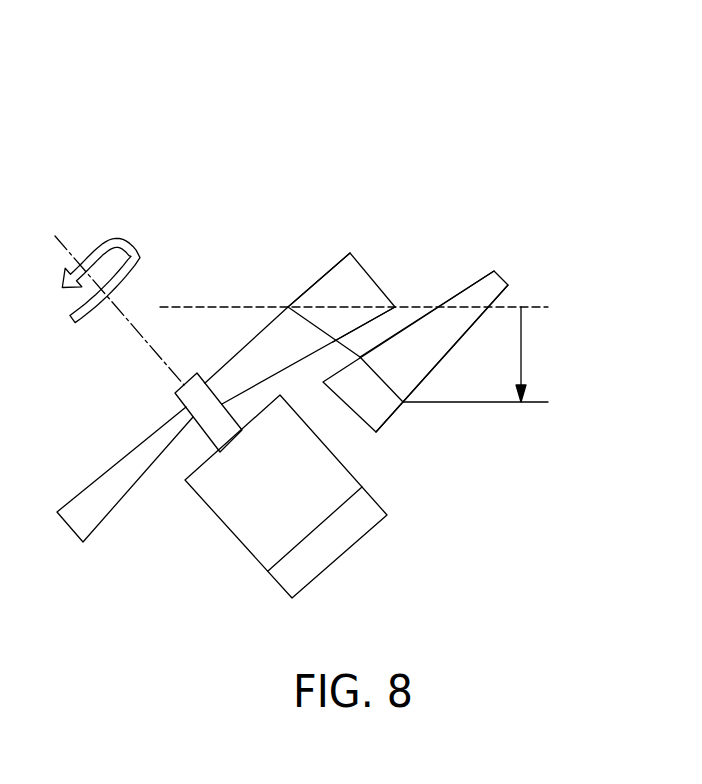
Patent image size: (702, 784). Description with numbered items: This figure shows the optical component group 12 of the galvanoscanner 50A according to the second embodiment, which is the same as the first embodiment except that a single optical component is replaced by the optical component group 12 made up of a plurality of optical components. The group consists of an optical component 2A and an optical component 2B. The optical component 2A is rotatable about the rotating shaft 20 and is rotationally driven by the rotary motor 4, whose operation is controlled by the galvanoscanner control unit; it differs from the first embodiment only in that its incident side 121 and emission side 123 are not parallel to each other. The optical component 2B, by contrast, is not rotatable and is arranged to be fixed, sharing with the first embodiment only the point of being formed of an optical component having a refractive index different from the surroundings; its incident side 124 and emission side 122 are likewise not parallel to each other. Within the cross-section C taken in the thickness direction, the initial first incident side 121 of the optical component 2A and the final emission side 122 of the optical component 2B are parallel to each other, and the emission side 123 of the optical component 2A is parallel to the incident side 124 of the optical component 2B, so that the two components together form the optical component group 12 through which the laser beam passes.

The galvanoscanner 50A is at (343, 86).
The optical component group 12 is at (363, 183).
The optical component 2A is at (353, 268).
The optical component 2B is at (497, 283).
The incident side 121 is at (294, 277).
The emission side 122 is at (404, 438).
The emission side 123 is at (388, 326).
The incident side 124 is at (466, 270).
The cross-section C is at (264, 354).
The rotating shaft 20 is at (192, 415).
The rotary motor 4 is at (257, 537).